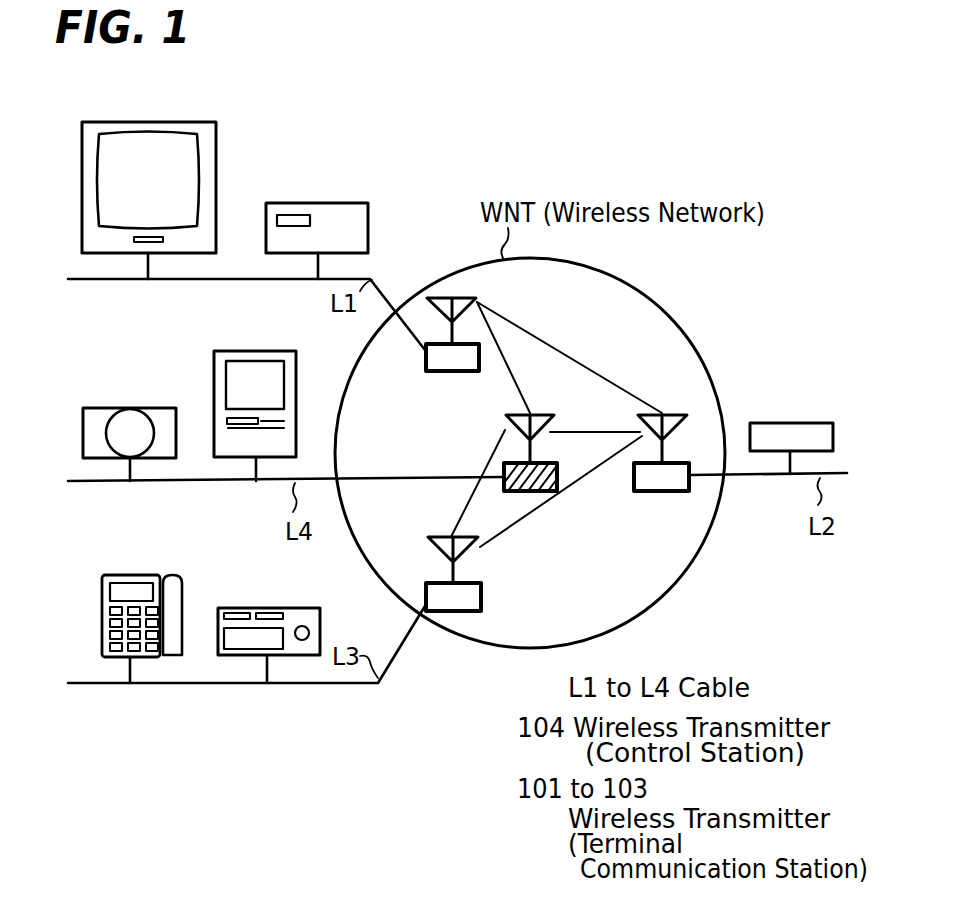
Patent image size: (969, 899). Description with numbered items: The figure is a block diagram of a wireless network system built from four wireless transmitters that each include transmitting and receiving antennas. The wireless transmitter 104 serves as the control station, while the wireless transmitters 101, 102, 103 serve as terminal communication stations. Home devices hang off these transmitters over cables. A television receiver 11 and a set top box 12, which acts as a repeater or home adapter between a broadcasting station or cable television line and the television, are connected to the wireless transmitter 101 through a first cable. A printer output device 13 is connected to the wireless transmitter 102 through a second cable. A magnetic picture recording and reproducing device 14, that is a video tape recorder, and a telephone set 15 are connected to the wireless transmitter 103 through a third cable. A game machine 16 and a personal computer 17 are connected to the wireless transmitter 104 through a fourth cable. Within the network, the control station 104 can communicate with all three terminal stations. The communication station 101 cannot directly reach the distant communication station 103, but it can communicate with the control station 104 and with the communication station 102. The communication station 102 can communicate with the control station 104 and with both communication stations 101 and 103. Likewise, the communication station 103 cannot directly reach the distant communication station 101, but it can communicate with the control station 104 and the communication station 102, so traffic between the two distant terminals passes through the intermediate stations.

The television receiver 11 is at (105, 120).
The set top box 12 is at (297, 201).
The printer output device 13 is at (786, 422).
The magnetic picture recording and reproducing device 14 is at (238, 683).
The telephone set 15 is at (118, 684).
The game machine 16 is at (107, 406).
The personal computer 17 is at (243, 350).
The wireless transmitter 101 is at (425, 366).
The wireless transmitter 102 is at (662, 493).
The wireless transmitter 103 is at (483, 597).
The wireless transmitter 104 is at (548, 493).